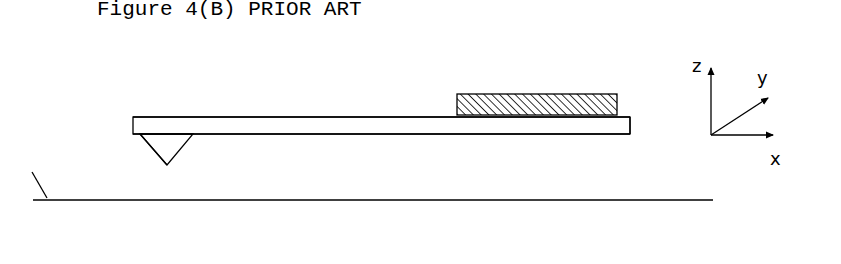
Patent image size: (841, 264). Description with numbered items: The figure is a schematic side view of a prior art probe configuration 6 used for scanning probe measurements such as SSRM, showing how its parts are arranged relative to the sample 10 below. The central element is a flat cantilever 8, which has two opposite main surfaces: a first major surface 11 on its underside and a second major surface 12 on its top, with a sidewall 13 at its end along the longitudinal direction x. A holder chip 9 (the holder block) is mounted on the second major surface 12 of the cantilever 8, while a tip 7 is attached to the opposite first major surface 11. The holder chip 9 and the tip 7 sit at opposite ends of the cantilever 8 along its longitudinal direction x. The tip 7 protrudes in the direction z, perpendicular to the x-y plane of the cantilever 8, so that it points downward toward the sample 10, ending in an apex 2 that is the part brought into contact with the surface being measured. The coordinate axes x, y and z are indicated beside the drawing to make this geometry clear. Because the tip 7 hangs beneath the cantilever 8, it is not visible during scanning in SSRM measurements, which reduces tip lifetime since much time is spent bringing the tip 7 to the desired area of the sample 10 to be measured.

The apex 2 is at (167, 167).
The probe configuration 6 is at (652, 41).
The tip 7 is at (160, 148).
The cantilever 8 is at (335, 125).
The holder chip 9 is at (527, 93).
The sample 10 is at (604, 239).
The 1st major surface cantilever 11 is at (377, 137).
The 2nd major surface cantilever 12 is at (377, 115).
The sidewall cantilever 13 is at (631, 127).